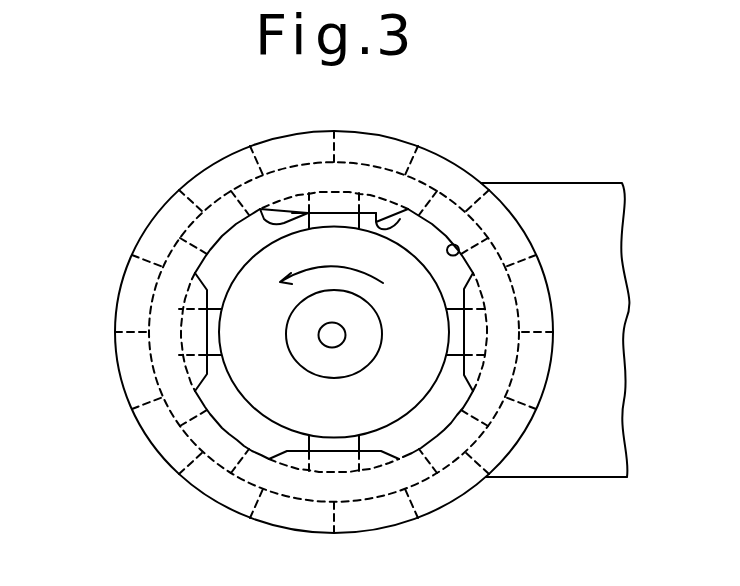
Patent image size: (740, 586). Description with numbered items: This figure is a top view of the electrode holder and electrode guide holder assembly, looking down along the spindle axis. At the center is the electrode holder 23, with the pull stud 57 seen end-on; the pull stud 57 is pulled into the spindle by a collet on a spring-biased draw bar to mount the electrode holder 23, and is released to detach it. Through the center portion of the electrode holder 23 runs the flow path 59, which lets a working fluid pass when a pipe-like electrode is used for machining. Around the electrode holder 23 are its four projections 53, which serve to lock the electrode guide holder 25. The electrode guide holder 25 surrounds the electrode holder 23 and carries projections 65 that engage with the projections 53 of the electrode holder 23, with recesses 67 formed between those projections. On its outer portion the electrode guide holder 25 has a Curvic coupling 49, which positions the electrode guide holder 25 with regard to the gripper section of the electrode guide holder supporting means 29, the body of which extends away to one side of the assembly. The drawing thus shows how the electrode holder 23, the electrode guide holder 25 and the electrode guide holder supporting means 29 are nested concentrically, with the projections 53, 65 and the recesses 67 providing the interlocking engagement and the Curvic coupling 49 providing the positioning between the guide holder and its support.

The electrode holder 23 is at (262, 288).
The electrode guide holder 25 is at (448, 503).
The electrode guide holder supporting means 29 is at (603, 304).
The Curvic coupling 49 is at (122, 280).
The projections 53 is at (247, 215).
The pull stud 57 is at (288, 348).
The flow path 59 is at (330, 338).
The projections 65 is at (413, 213).
The recesses 67 is at (460, 252).